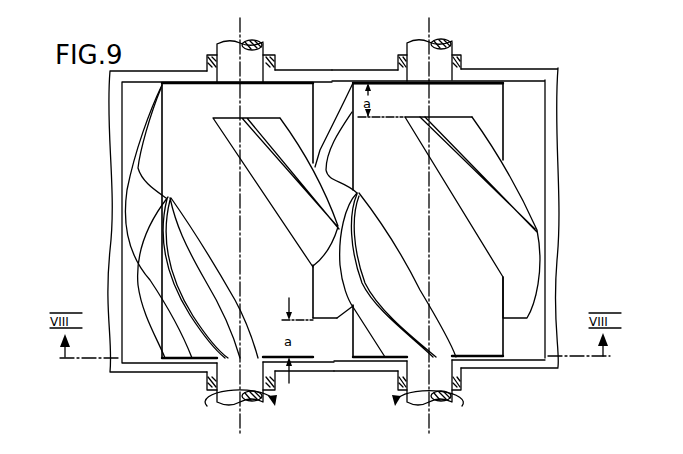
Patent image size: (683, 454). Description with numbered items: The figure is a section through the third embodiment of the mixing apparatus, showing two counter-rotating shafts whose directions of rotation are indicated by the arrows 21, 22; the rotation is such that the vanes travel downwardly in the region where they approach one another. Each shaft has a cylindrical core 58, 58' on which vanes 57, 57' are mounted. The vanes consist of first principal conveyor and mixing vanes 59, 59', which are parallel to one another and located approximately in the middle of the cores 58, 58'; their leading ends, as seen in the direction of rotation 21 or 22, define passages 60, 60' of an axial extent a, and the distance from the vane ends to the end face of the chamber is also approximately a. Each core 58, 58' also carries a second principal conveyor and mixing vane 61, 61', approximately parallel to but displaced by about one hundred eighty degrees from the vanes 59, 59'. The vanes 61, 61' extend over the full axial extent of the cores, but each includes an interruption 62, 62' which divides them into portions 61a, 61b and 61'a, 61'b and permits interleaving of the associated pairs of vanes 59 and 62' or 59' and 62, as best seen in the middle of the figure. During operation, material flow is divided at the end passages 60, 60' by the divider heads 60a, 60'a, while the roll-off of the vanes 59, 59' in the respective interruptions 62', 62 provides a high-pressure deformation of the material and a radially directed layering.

The arrow 21 is at (425, 235).
The arrow 22 is at (244, 236).
The vanes 57 is at (467, 222).
The vanes 57' is at (192, 222).
The cylindrical core 58 is at (467, 220).
The cylindrical core 58' is at (192, 222).
The first principal conveyor and mixing vane 59 is at (503, 217).
The first principal conveyor and mixing vane 59' is at (276, 192).
The passage 60 is at (428, 70).
The divider head 60a is at (458, 117).
The passage 60' is at (321, 361).
The divider head 60'a is at (354, 355).
The second principal conveyor and mixing vane 61 is at (349, 127).
The vane portion 61a is at (373, 262).
The vane portion 61b is at (345, 135).
The second principal conveyor and mixing vane 61' is at (121, 221).
The vane portion 61'a is at (210, 278).
The vane portion 61'b is at (107, 143).
The interruption 62 is at (362, 261).
The interruption 62' is at (170, 265).